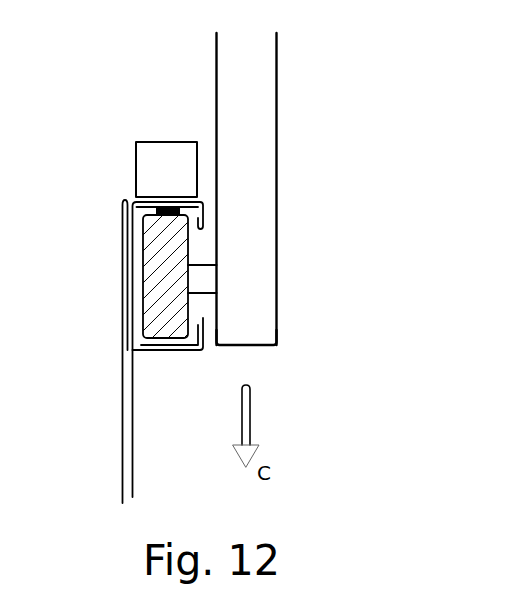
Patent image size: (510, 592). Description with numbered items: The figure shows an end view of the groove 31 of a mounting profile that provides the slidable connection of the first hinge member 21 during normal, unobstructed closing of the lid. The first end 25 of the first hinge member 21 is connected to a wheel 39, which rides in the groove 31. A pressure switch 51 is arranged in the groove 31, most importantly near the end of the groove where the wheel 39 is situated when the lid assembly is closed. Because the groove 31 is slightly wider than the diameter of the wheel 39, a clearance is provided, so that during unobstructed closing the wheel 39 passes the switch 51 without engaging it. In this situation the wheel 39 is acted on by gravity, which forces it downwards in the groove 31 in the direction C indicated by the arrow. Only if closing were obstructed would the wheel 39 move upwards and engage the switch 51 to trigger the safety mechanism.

The first hinge member 21 is at (252, 100).
The first end of the first hinge member 25 is at (252, 305).
The groove 31 is at (127, 225).
The wheel 39 is at (155, 283).
The pressure switch 51 is at (155, 153).